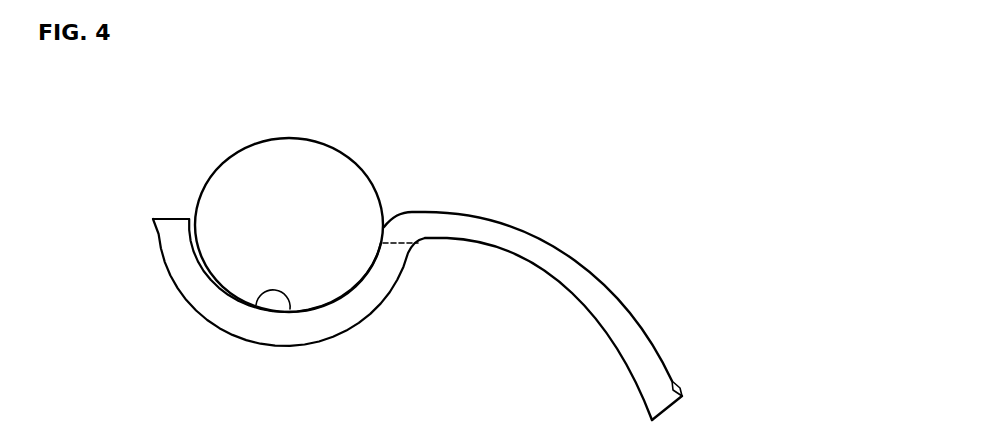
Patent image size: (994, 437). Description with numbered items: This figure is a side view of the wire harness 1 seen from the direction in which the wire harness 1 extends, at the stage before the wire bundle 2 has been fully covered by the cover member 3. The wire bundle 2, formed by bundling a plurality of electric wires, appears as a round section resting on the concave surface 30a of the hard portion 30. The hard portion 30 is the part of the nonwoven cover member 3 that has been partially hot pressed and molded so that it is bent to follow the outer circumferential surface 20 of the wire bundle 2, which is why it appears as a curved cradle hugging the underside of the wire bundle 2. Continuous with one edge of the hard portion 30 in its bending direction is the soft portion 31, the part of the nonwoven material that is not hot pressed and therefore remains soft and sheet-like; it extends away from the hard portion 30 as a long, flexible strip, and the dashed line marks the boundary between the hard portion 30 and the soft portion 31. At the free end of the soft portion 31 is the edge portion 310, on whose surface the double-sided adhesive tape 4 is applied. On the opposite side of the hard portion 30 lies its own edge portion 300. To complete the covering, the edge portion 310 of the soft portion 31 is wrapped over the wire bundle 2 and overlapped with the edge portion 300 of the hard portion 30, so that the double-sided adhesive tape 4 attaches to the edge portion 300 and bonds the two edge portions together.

The wire harness 1 is at (413, 135).
The wire bundle 2 is at (259, 158).
The outer circumferential surface 20 is at (313, 137).
The cover member 3 is at (380, 328).
The hard portion 30 is at (295, 335).
The concave surface 30a is at (256, 305).
The edge portion 300 is at (163, 235).
The soft portion 31 is at (572, 273).
The edge portion 310 is at (652, 408).
The double-sided adhesive tape 4 is at (680, 387).